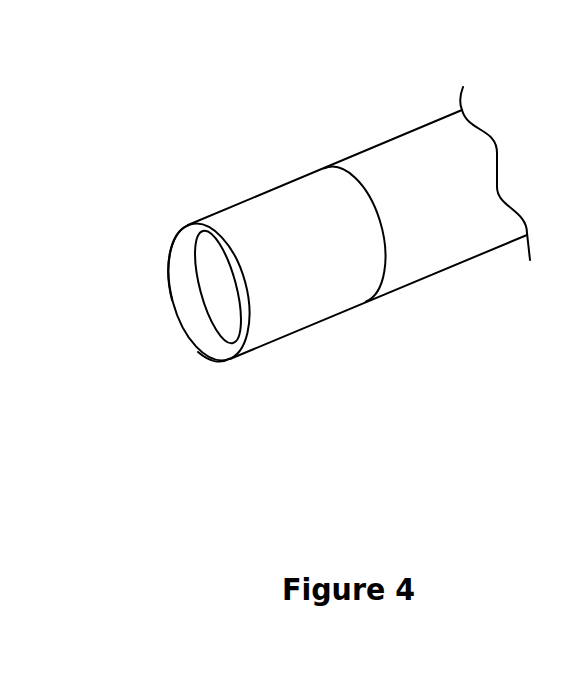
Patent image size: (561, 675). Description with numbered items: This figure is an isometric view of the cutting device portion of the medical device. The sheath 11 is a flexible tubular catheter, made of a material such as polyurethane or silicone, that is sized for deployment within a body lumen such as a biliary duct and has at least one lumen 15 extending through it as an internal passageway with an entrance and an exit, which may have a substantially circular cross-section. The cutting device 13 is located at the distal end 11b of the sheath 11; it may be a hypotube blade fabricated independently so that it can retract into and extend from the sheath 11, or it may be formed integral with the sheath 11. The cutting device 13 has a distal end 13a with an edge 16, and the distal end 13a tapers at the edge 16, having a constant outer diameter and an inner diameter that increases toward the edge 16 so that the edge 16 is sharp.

The sheath 11 is at (428, 124).
The distal end of sheath 11b is at (347, 157).
The cutting device 13 is at (262, 192).
The distal end of cutting device 13a is at (228, 362).
The lumen 15 is at (222, 288).
The edge 16 is at (167, 290).